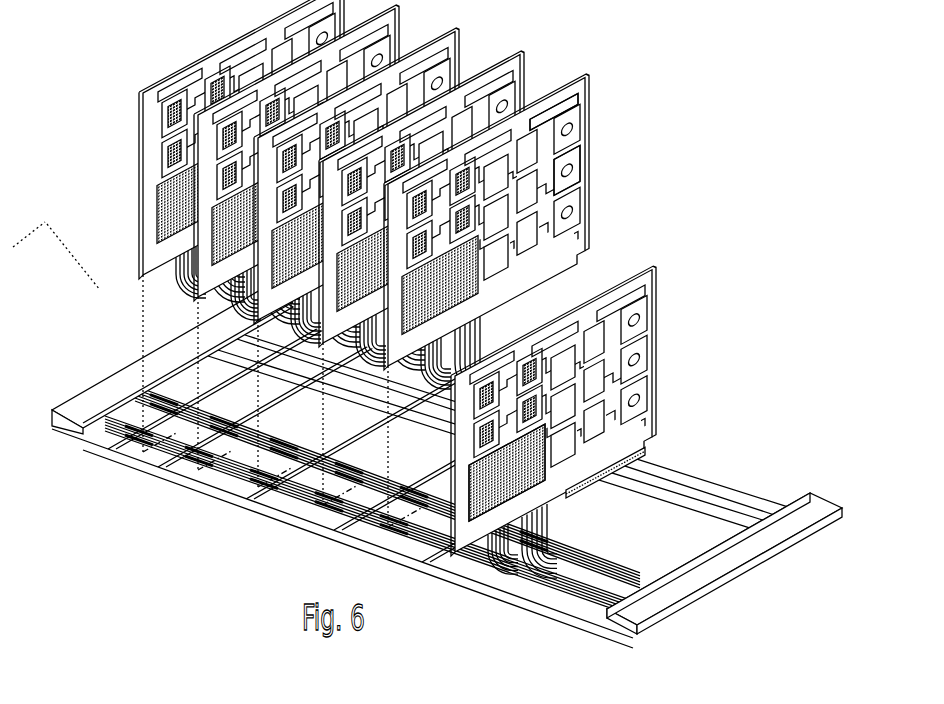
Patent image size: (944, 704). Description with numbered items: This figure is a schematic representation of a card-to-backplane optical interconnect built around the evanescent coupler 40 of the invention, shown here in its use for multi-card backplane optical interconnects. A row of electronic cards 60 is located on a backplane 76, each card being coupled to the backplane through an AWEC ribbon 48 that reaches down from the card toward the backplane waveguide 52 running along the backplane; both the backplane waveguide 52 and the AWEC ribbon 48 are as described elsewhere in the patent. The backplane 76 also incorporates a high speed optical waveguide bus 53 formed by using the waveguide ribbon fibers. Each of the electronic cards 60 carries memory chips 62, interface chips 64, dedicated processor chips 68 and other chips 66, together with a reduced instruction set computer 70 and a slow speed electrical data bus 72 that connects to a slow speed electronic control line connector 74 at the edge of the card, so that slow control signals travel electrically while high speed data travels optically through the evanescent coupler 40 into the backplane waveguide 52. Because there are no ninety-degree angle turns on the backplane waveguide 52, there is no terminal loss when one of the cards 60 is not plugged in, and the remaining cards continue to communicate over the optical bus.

The evanescent coupler 40 is at (510, 567).
The AWEC ribbon 48 is at (477, 327).
The backplane waveguide 52 is at (488, 568).
The high speed optical waveguide bus 53 is at (322, 497).
The electronic cards 60 is at (519, 53).
The memory chips 62 is at (576, 104).
The interface chips 64 is at (571, 170).
The other chips 66 is at (593, 345).
The dedicated processor chips 68 is at (141, 200).
The reduced instruction set computer 70 is at (525, 450).
The slow speed electrical data bus 72 is at (740, 503).
The slow speed electronic control line connector 74 is at (647, 448).
The backplane 76 is at (90, 457).